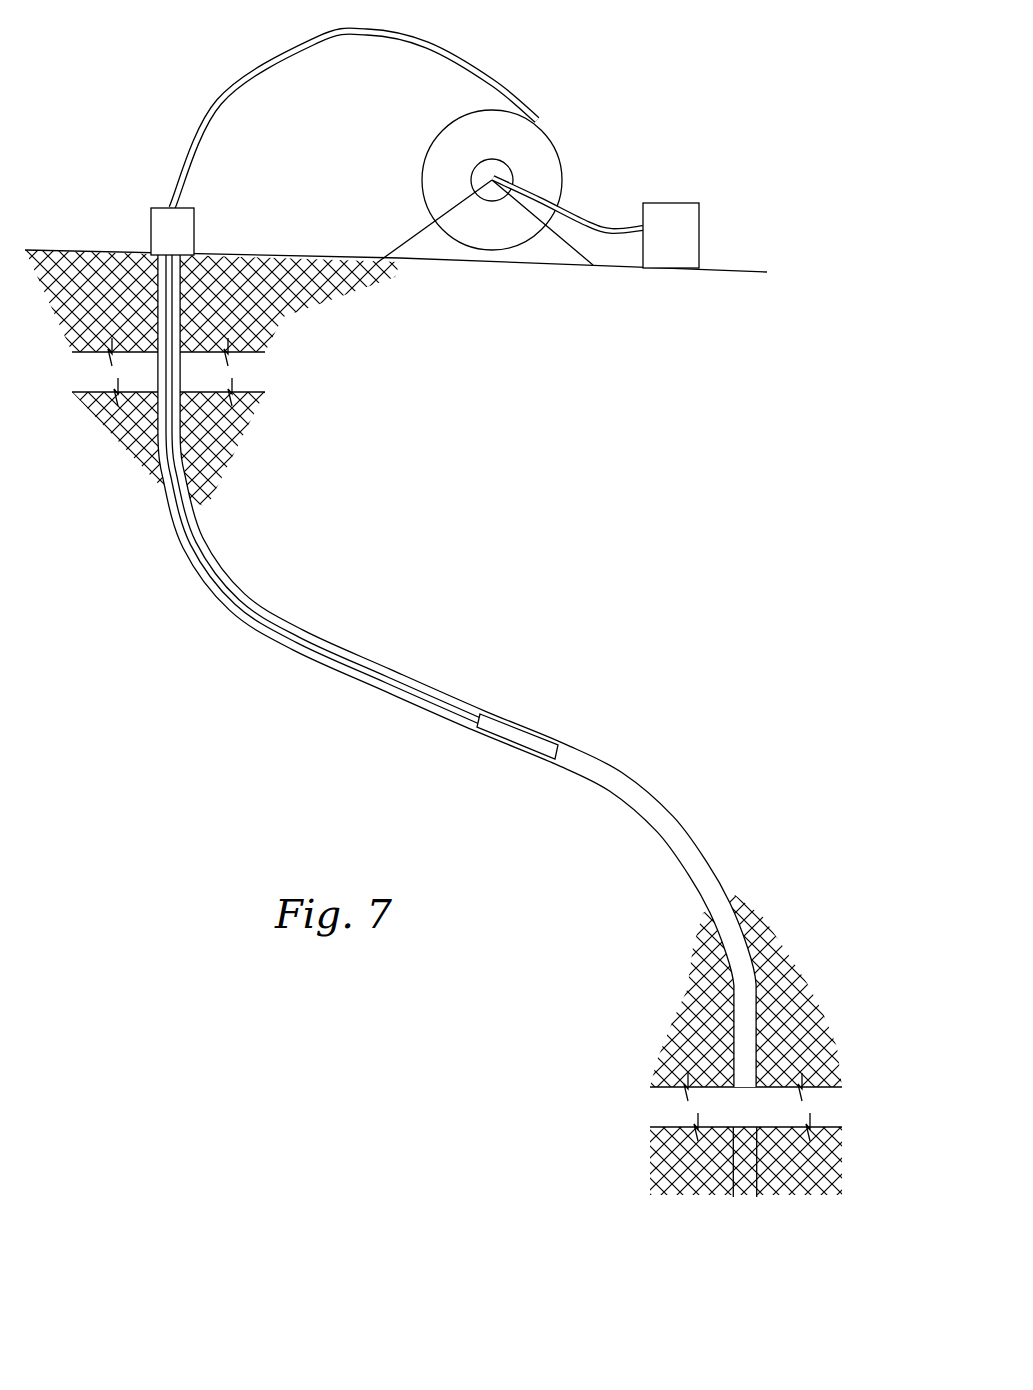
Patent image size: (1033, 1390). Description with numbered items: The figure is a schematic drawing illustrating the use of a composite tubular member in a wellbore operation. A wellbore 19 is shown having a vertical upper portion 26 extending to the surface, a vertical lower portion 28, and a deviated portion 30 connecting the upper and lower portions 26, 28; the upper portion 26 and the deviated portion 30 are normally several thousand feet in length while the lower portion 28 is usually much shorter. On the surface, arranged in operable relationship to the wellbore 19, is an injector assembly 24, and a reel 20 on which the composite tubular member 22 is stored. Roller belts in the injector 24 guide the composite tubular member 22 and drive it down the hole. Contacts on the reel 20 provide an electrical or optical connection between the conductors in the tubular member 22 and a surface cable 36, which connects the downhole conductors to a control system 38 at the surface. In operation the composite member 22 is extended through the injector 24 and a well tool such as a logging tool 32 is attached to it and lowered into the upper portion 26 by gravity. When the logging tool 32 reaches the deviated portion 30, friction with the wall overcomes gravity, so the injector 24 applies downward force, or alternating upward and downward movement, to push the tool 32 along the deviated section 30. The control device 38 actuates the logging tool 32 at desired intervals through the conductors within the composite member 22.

The wellbore 19 is at (152, 288).
The reel 20 is at (537, 147).
The composite tubular member 22 is at (219, 102).
The injector assembly 24 is at (188, 222).
The vertical upper portion 26 is at (177, 340).
The vertical lower portion 28 is at (735, 1190).
The deviated portion 30 is at (293, 648).
The logging tool 32 is at (518, 738).
The surface cable 36 is at (593, 218).
The control system 38 is at (680, 215).